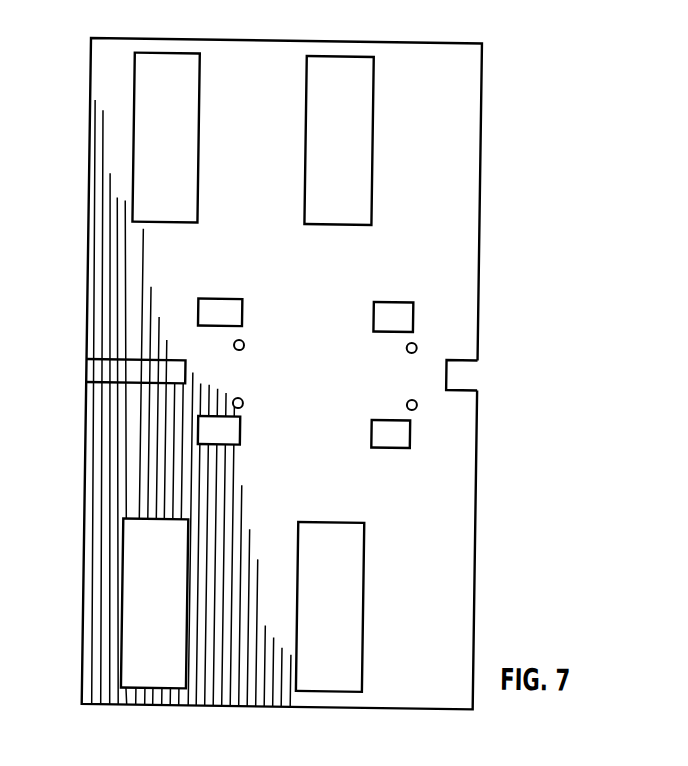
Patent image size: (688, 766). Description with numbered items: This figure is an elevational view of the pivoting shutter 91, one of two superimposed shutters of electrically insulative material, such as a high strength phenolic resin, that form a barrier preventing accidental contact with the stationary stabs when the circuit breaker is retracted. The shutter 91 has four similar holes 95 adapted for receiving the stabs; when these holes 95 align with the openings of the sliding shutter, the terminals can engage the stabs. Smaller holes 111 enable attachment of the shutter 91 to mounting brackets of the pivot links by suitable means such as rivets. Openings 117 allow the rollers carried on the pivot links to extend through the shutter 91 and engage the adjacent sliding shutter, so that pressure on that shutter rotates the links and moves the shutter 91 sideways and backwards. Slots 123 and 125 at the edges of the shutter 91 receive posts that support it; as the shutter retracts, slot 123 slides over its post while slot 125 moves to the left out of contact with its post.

The shutter 91 is at (414, 51).
The holes 95 is at (200, 109).
The holes 111 is at (248, 400).
The holes 117 is at (240, 302).
The slot 123 is at (101, 362).
The slot 125 is at (472, 357).